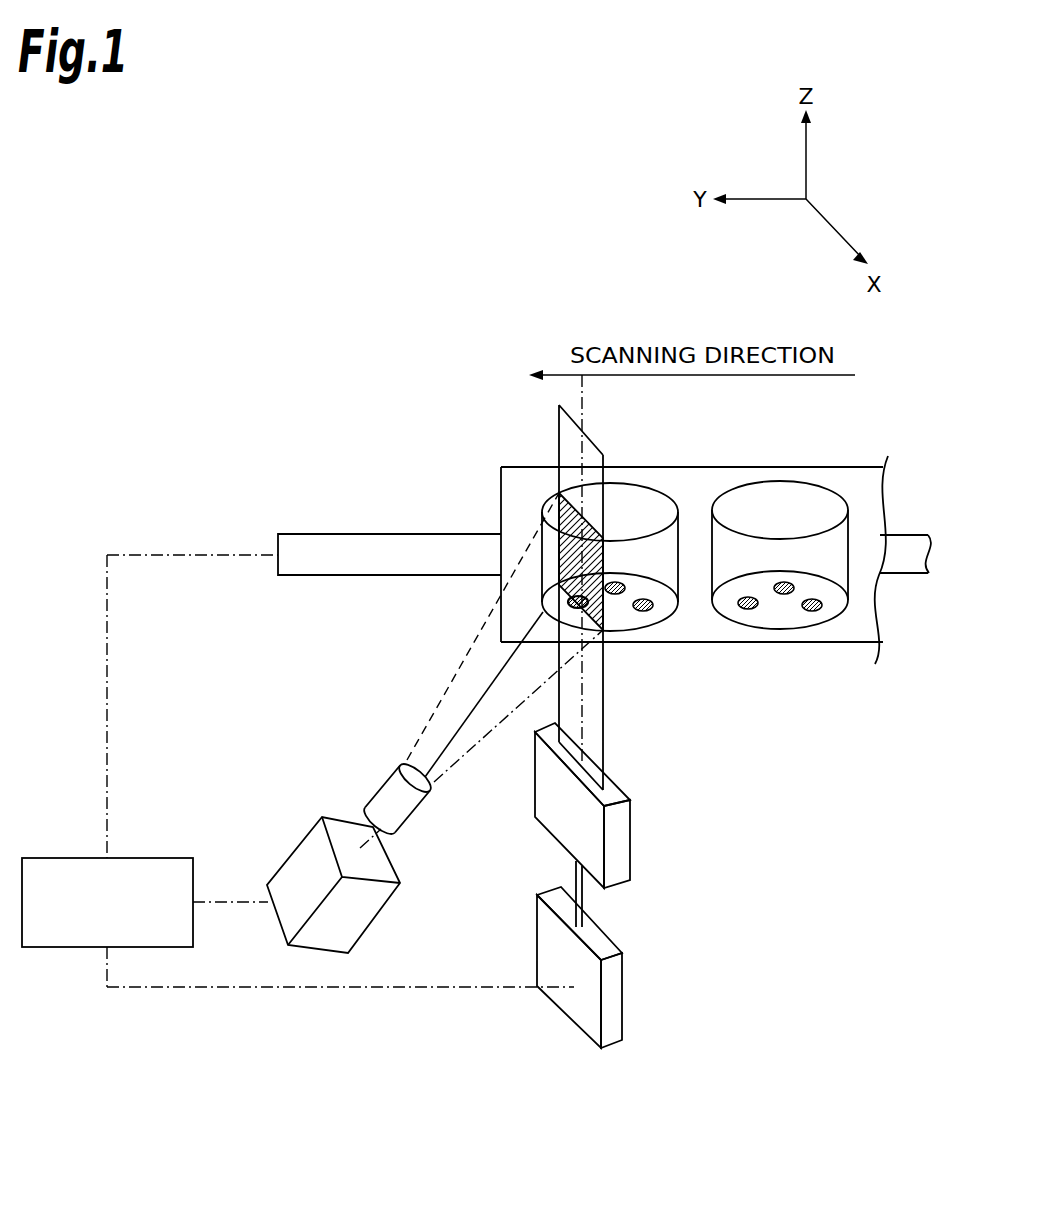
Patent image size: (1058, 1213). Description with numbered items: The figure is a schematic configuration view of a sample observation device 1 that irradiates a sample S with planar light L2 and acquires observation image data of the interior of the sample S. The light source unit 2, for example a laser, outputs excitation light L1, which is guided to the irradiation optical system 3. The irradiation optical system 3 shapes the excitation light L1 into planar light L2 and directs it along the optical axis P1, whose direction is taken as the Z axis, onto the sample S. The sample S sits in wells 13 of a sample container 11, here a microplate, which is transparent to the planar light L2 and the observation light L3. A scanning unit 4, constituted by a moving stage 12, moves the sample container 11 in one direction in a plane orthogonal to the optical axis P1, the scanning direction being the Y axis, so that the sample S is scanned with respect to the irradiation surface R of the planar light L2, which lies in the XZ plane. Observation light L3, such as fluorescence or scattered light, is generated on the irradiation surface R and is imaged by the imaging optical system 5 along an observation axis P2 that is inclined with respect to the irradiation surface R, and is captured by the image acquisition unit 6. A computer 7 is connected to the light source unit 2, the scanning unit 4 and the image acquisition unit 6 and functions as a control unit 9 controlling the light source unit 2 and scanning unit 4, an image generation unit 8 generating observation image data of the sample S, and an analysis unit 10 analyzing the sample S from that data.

The sample observation device 1 is at (160, 385).
The light source unit 2 is at (608, 987).
The irradiation optical system 3 is at (630, 827).
The scanning unit 4 is at (397, 450).
The imaging optical system 5 is at (392, 777).
The image acquisition unit 6 is at (318, 818).
The computer 7 is at (127, 861).
The image generation unit 8 is at (127, 861).
The control unit 9 is at (127, 861).
The analysis unit 10 is at (155, 858).
The sample container 11 is at (537, 467).
The moving stage 12 is at (345, 534).
The wells 13 is at (652, 502).
The sample S is at (643, 611).
The irradiation surface R is at (556, 528).
The optical axis P1 is at (585, 682).
The observation axis P2 is at (495, 673).
The excitation light L1 is at (583, 900).
The planar light L2 is at (605, 737).
The observation light L3 is at (447, 672).